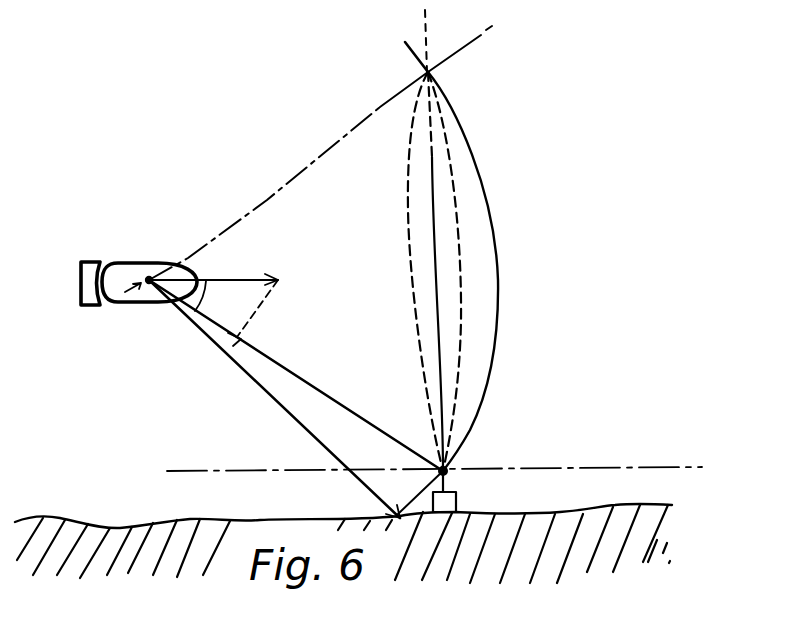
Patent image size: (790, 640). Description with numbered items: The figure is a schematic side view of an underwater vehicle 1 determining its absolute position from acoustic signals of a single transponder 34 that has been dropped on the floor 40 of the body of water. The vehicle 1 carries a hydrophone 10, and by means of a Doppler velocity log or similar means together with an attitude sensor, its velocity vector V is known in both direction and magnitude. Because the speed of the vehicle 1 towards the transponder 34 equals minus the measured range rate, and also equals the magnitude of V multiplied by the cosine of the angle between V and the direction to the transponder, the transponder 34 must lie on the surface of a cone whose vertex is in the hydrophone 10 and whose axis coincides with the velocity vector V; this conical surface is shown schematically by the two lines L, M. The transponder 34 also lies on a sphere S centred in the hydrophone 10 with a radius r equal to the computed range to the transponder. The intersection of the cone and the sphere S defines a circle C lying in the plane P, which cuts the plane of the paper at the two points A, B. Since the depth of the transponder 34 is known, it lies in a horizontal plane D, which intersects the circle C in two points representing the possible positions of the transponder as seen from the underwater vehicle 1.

The unmanned underwater vehicle 1 is at (130, 263).
The hydrophone 10 is at (123, 304).
The transponder 34 is at (472, 510).
The floor 40 is at (77, 518).
The intersection point A is at (462, 470).
The intersection point B is at (452, 78).
The circle C is at (413, 259).
The horizontal plane D is at (590, 468).
The line L is at (302, 380).
The line M is at (283, 178).
The plane P is at (433, 167).
The sphere S is at (490, 205).
The velocity vector V is at (252, 273).
The radius r is at (243, 374).